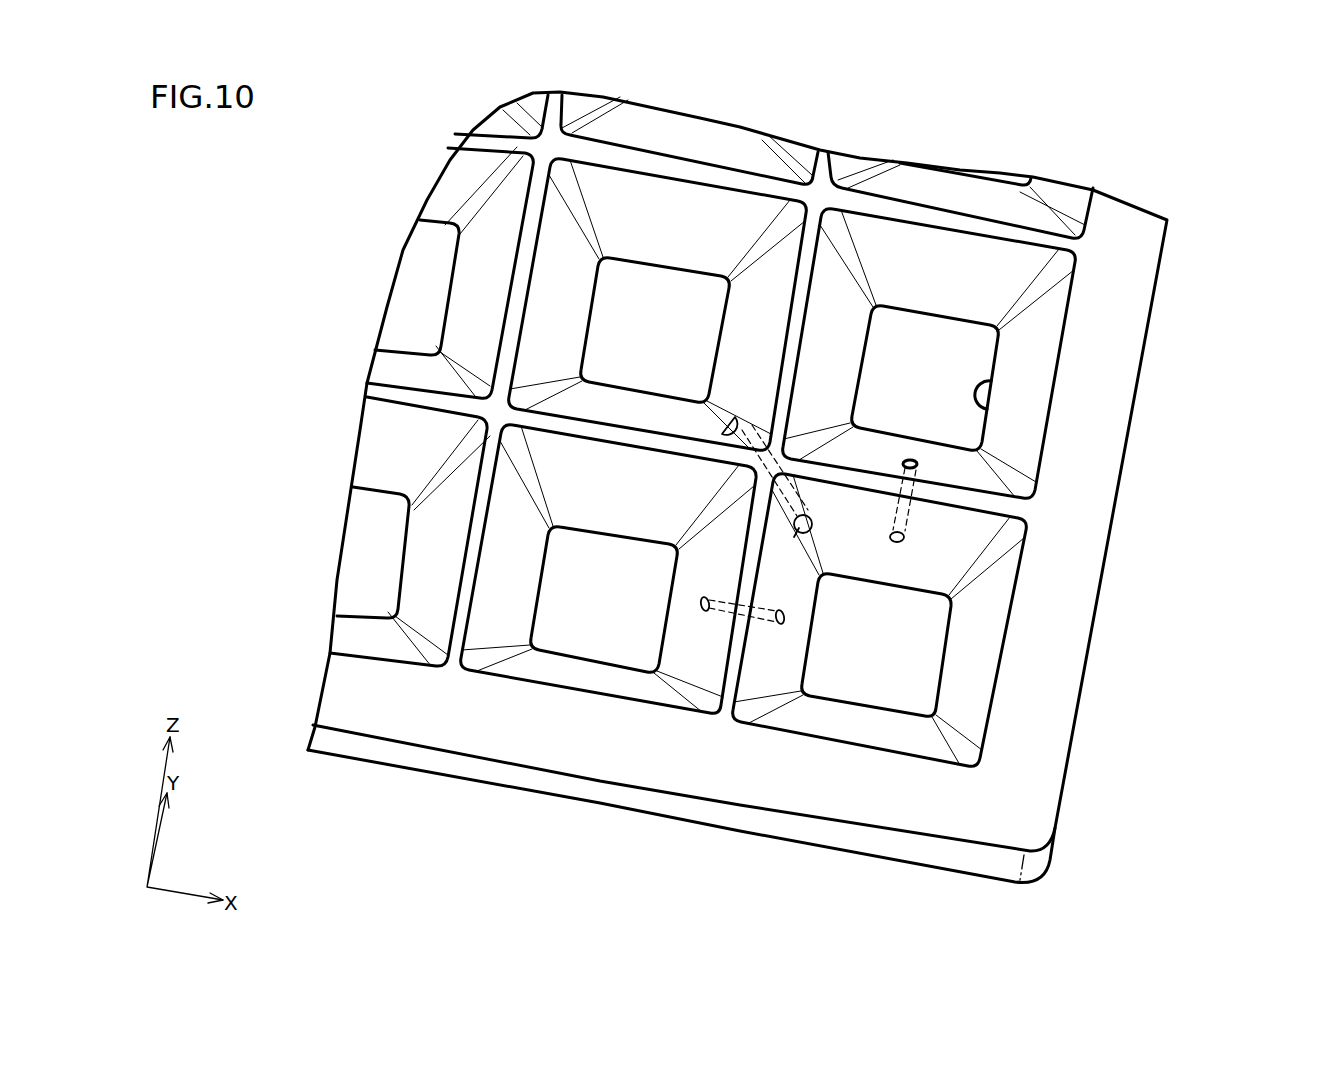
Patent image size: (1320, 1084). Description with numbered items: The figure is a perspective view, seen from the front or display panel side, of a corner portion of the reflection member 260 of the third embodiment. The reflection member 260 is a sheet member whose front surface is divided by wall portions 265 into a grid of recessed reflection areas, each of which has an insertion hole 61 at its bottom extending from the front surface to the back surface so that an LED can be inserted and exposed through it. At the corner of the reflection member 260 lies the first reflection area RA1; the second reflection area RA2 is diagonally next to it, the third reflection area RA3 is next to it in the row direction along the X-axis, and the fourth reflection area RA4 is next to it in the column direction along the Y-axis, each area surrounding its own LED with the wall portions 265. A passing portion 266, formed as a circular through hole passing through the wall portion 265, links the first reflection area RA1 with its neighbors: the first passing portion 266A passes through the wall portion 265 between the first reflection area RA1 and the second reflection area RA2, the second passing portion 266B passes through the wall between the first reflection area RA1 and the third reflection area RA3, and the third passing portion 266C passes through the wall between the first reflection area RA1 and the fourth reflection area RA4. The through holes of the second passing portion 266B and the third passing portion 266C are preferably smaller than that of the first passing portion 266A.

The reflection member 260 is at (1062, 71).
The wall portion 265 is at (950, 540).
The insertion hole 61 is at (993, 409).
The first reflection area RA1 is at (903, 668).
The second reflection area RA2 is at (603, 336).
The third reflection area RA3 is at (570, 608).
The fourth reflection area RA4 is at (948, 352).
The passing portion 266 is at (835, 917).
The first passing portion 266A is at (805, 537).
The second passing portion 266B is at (705, 606).
The third passing portion 266C is at (897, 545).